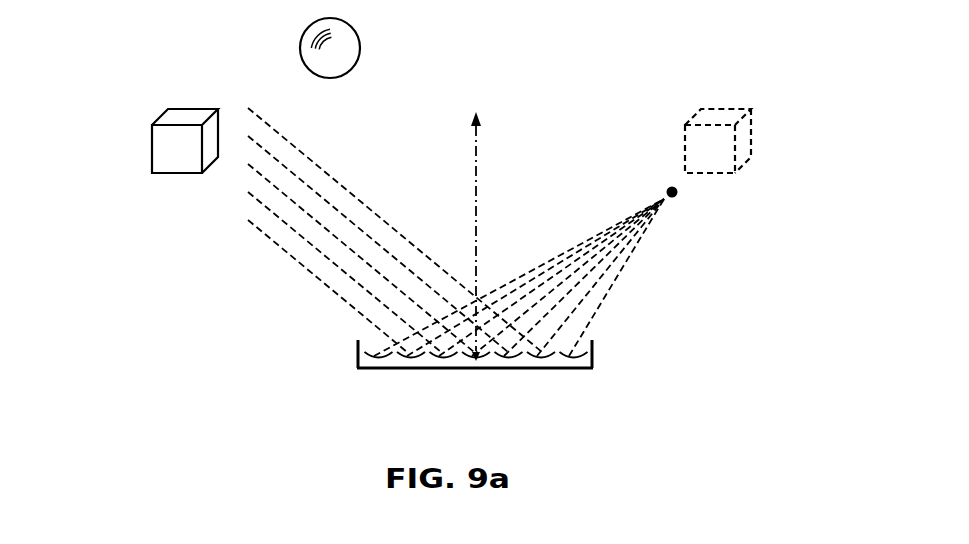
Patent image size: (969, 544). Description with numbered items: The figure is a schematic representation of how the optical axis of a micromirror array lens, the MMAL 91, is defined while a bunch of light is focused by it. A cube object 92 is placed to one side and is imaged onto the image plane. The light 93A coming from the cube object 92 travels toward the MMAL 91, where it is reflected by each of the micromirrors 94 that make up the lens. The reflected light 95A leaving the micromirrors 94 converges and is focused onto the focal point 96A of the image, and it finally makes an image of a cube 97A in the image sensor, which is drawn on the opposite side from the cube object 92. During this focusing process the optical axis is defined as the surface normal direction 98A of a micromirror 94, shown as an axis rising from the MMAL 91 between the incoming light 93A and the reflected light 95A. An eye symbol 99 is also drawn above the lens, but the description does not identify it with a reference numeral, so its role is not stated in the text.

The MMAL 91 is at (350, 355).
The cube object 92 is at (148, 146).
The light 93A is at (278, 258).
The micromirror 94 is at (592, 368).
The reflected light 95A is at (620, 290).
The focal point 96A is at (677, 197).
The image of a cube 97A is at (752, 140).
The surface normal direction 98A is at (482, 162).
The observer eye 99 is at (360, 44).